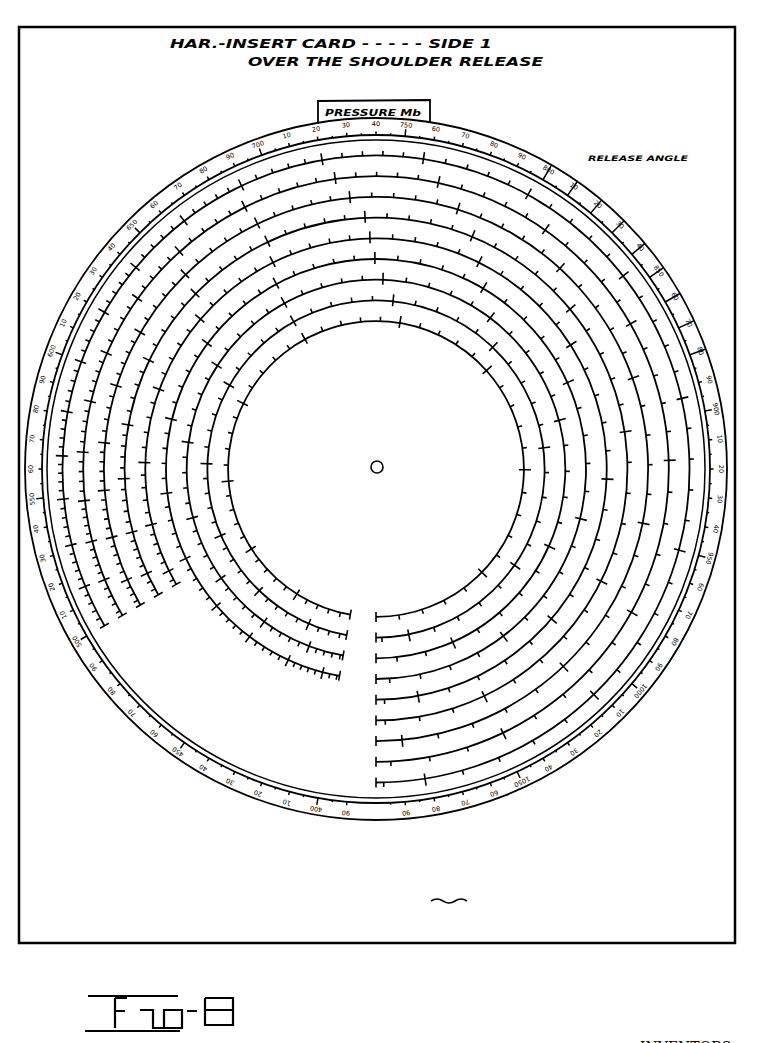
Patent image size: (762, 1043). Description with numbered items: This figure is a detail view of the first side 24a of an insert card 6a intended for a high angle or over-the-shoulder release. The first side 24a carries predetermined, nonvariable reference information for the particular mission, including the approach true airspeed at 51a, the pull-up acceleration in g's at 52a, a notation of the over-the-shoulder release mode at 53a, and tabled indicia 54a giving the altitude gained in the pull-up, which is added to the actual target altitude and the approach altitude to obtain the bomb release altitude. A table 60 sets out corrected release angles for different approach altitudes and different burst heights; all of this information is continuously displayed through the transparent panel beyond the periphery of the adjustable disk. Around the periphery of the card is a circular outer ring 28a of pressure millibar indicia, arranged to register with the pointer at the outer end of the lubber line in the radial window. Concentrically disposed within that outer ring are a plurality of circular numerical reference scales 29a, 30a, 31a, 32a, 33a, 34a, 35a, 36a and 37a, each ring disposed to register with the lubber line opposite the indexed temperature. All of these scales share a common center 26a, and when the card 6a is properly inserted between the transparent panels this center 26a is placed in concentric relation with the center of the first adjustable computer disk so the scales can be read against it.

The insert card 6a is at (585, 39).
The first side 24a is at (448, 892).
The center 26a is at (379, 462).
The circular outer ring 28a is at (578, 190).
The circular numerical reference scale 29a is at (588, 219).
The circular numerical reference scale 30a is at (580, 245).
The circular numerical reference scale 31a is at (582, 280).
The circular numerical reference scale 32a is at (580, 305).
The circular numerical reference scale 33a is at (587, 332).
The circular numerical reference scale 34a is at (505, 395).
The circular numerical reference scale 35a is at (518, 428).
The circular numerical reference scale 36a is at (540, 467).
The circular numerical reference scale 37a is at (508, 519).
The approach true airspeed 51a is at (112, 109).
The pull-up acceleration 52a is at (105, 161).
The release mode indicia 53a is at (670, 129).
The tabled indicia 54a is at (602, 831).
The table 60 is at (129, 848).